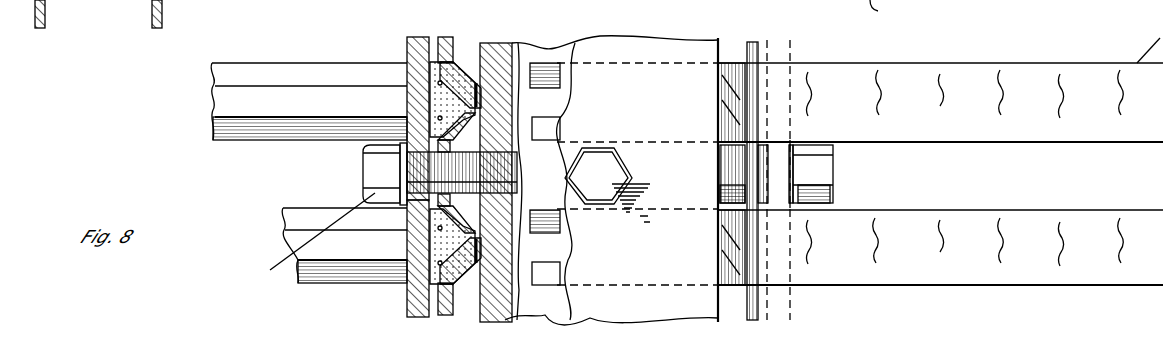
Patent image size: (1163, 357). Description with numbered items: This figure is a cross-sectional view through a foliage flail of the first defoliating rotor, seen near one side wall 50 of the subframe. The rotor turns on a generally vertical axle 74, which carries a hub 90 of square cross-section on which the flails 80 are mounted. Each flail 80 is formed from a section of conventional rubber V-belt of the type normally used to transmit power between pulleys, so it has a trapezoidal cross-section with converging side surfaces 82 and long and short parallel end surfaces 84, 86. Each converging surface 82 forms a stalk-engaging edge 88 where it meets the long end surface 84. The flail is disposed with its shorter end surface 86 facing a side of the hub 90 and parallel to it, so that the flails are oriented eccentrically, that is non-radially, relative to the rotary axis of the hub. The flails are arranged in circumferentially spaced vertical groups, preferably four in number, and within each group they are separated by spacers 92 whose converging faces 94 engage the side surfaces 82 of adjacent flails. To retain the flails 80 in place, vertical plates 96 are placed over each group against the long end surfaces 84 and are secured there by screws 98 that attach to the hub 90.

The side wall 50 is at (884, 14).
The axle 74 is at (715, 45).
The flail 80 is at (483, 65).
The converging side surface 82 is at (260, 72).
The long end surface 84 is at (425, 82).
The short end surface 86 is at (228, 105).
The stalk-engaging edge 88 is at (308, 60).
The hub portion 90 is at (705, 313).
The spacer 92 is at (797, 181).
The converging face 94 is at (735, 128).
The vertical plate 96 is at (408, 300).
The screw 98 is at (310, 242).